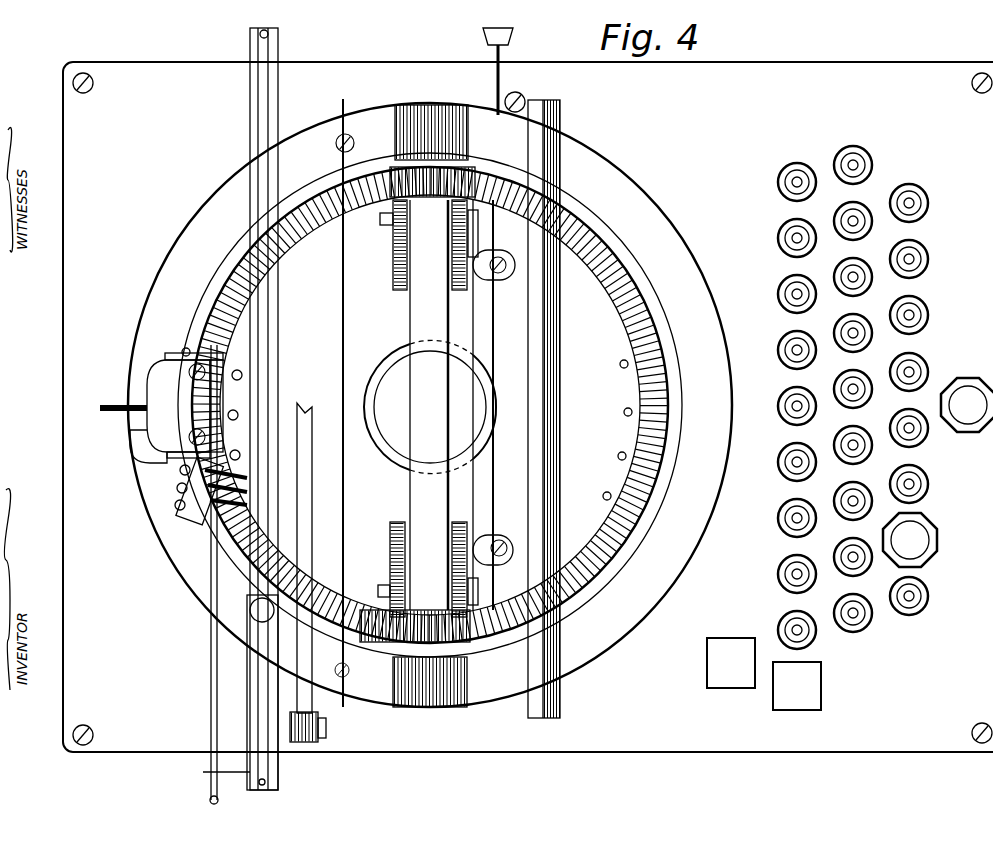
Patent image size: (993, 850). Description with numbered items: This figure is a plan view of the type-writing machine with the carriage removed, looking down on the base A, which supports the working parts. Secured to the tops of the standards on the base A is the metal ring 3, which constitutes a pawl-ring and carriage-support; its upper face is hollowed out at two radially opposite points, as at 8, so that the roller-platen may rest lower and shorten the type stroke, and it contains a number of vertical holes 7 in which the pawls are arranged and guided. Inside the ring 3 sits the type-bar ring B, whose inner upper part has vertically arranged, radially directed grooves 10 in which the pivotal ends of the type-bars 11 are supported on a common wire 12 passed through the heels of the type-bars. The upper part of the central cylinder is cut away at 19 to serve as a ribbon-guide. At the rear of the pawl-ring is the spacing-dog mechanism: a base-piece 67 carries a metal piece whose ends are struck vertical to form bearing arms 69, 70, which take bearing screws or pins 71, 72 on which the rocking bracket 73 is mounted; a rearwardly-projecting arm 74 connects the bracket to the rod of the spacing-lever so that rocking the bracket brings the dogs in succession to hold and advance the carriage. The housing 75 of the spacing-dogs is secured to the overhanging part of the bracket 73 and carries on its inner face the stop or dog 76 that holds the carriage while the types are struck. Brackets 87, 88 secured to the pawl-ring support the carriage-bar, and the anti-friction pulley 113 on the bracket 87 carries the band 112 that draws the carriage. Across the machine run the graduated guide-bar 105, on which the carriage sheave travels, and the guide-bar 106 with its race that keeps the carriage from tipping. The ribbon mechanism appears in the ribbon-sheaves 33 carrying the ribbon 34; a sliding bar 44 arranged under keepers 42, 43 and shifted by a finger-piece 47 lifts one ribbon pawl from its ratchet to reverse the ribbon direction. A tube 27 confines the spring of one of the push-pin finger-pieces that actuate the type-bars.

The base A is at (528, 407).
The type-bar ring B is at (615, 333).
The ring 3 is at (430, 405).
The vertical holes 7 is at (201, 495).
The hollowed-out portions 8 is at (436, 122).
The grooves 10 is at (618, 276).
The type-bars 11 is at (270, 500).
The wire 12 is at (372, 390).
The cut-away portion 19 is at (406, 346).
The tube 27 is at (850, 428).
The ribbon-sheaves 33 is at (393, 268).
The ribbon 34 is at (429, 564).
The keeper 42 is at (498, 537).
The keeper 43 is at (488, 275).
The sliding bar 44 is at (480, 346).
The finger-piece 47 is at (498, 88).
The base-piece 67 is at (147, 446).
The bearing arm 69 is at (186, 436).
The bearing arm 70 is at (185, 355).
The bearing screw 71 is at (186, 348).
The bearing screw 72 is at (190, 475).
The rocking bracket 73 is at (185, 409).
The rearwardly-projecting arm 74 is at (118, 394).
The housing 75 is at (215, 408).
The dog 76 is at (222, 383).
The bracket 87 is at (278, 778).
The bracket 88 is at (281, 409).
The guide-bar 105 is at (561, 640).
The guide-bar 106 is at (338, 558).
The band 112 is at (320, 665).
The anti-friction pulley 113 is at (327, 727).